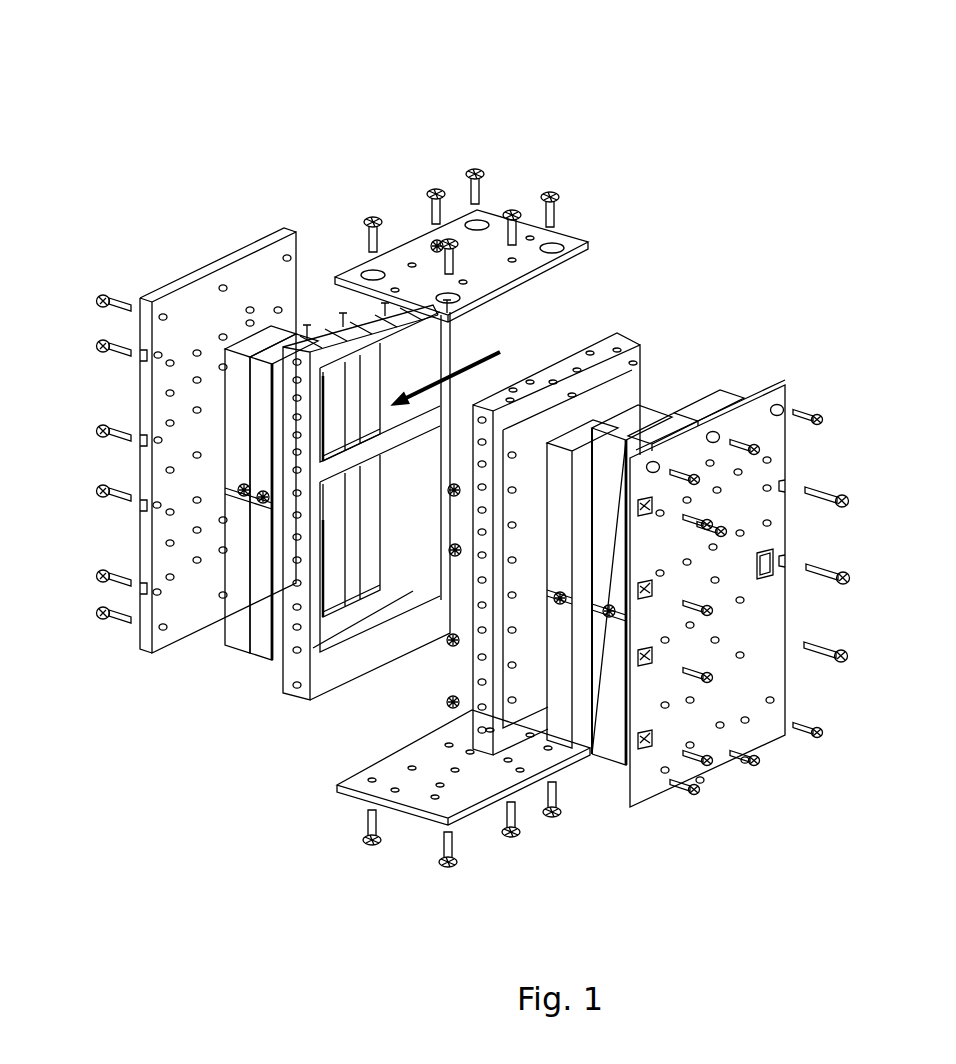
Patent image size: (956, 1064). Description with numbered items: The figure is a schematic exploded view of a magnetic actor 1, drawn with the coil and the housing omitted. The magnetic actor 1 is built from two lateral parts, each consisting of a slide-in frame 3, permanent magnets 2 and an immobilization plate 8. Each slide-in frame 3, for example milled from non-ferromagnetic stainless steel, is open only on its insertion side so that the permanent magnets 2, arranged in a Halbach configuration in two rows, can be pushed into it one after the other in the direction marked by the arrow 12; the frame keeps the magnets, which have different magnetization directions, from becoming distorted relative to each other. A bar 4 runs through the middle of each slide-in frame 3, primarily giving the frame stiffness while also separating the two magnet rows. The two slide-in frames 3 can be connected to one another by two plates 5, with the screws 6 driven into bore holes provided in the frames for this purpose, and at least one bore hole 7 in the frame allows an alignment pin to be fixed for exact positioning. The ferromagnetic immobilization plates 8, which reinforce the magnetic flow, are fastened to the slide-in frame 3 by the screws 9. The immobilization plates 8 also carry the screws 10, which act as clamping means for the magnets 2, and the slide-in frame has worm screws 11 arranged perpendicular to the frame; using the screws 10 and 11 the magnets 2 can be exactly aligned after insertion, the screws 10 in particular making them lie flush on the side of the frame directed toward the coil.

The magnetic actor 1 is at (457, 517).
The permanent magnets 2 is at (593, 470).
The slide-in frame 3 is at (293, 663).
The bar 4 is at (397, 460).
The plates 5 is at (425, 395).
The screws 6 is at (440, 188).
The bore hole 7 is at (300, 290).
The immobilization plate 8 is at (172, 300).
The screws 9 is at (822, 420).
The screws 10 is at (712, 672).
The screws 11 is at (470, 710).
The arrow 12 is at (380, 310).